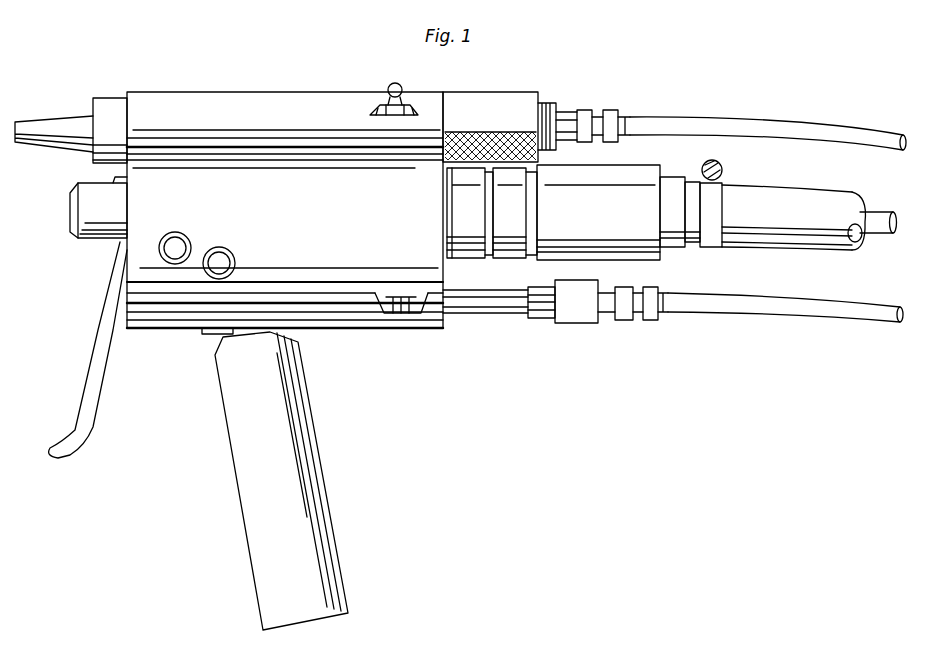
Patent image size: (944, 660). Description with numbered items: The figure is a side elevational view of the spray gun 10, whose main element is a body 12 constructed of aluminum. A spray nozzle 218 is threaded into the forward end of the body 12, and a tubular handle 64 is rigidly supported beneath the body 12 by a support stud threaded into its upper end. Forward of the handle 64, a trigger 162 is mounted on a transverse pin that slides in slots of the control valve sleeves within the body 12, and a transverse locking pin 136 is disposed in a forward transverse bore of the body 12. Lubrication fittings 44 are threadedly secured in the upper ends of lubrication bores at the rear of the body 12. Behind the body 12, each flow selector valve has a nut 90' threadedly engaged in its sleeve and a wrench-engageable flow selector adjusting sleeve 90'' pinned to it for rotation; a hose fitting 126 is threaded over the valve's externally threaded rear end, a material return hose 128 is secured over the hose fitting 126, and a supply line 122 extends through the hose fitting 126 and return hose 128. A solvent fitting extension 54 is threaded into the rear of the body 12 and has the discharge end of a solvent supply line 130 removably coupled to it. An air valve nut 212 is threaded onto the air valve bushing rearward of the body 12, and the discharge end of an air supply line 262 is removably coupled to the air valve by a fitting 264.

The spray gun 10 is at (230, 93).
The body 12 is at (174, 112).
The lubrication fittings 44 is at (391, 86).
The solvent fitting extension 54 is at (500, 308).
The tubular handle 64 is at (256, 478).
The nut 90' is at (435, 213).
The flow selector adjusting sleeve 90'' is at (545, 265).
The supply line 122 is at (877, 222).
The hose fitting 126 is at (638, 248).
The material return hose 128 is at (789, 244).
The solvent supply line 130 is at (778, 305).
The locking pin 136 is at (177, 246).
The trigger 162 is at (92, 394).
The air valve nut 212 is at (493, 103).
The spray nozzle 218 is at (72, 131).
The air supply line 262 is at (655, 118).
The fitting 264 is at (571, 118).